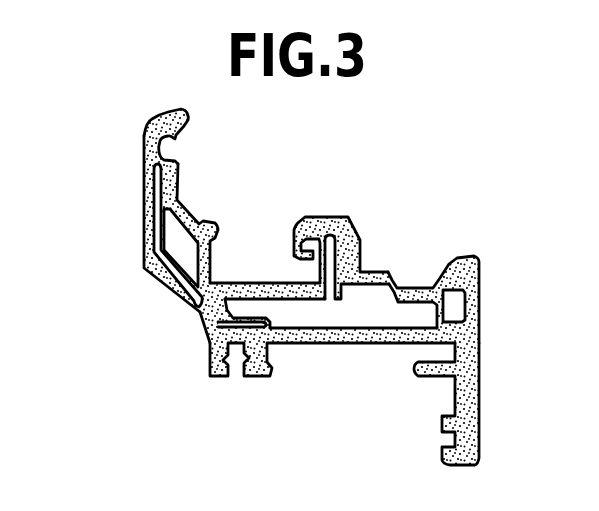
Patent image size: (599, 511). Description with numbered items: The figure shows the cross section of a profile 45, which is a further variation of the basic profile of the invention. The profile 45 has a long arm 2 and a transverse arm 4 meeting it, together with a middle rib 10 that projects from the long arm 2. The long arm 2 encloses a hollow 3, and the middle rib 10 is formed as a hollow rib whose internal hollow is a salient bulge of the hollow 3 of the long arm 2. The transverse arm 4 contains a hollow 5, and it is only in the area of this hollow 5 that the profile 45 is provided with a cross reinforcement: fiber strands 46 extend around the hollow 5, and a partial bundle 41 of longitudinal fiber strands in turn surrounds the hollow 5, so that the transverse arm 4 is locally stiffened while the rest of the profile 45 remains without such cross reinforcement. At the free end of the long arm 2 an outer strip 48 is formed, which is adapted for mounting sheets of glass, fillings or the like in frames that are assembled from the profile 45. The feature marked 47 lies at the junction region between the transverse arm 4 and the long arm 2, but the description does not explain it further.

The long arm 2 is at (480, 300).
The hollow of the long arm 3 is at (348, 313).
The transverse arm 4 is at (142, 152).
The hollow of the transverse arm 5 is at (168, 231).
The middle rib 10 is at (328, 236).
The partial bundle of longitudinal fiber strands 41 is at (340, 251).
The profile 45 is at (136, 375).
The fiber strands 46 is at (207, 296).
The groove / slot junction 47 is at (202, 306).
The outer strip 48 is at (468, 397).